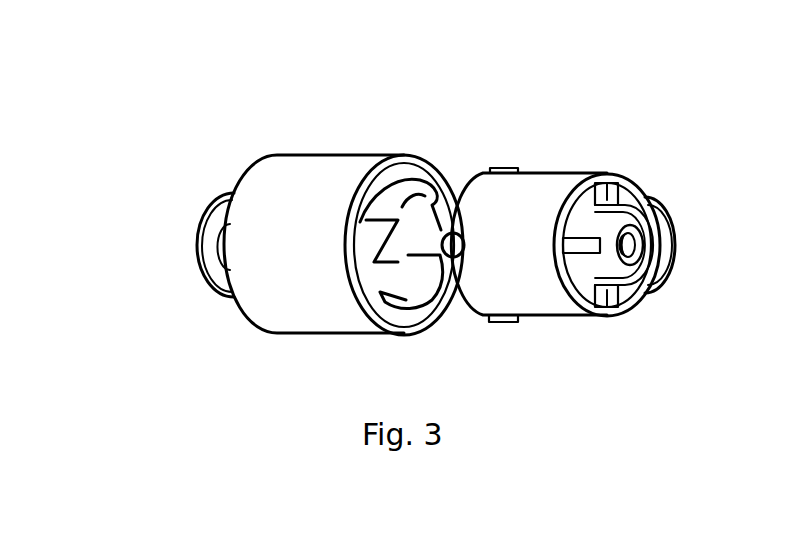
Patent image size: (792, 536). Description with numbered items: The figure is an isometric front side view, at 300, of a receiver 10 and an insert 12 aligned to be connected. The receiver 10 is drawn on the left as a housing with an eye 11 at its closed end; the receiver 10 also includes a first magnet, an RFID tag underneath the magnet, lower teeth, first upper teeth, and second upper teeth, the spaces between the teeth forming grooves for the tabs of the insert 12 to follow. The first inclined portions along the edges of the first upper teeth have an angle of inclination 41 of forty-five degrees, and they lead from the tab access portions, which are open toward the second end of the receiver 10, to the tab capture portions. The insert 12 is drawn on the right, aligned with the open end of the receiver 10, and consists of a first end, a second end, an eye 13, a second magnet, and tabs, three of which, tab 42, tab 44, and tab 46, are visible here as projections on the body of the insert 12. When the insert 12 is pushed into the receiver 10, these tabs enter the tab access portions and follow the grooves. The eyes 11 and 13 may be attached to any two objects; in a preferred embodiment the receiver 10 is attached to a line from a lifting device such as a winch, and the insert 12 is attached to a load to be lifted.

The isometric front side view of the receiver and insert 300 is at (208, 108).
The receiver 10 is at (316, 172).
The eye 11 is at (207, 232).
The insert 12 is at (551, 178).
The eye 13 is at (660, 230).
The angle of inclination 41 is at (388, 259).
The tab 42 is at (507, 325).
The tab 44 is at (463, 243).
The tab 46 is at (510, 168).